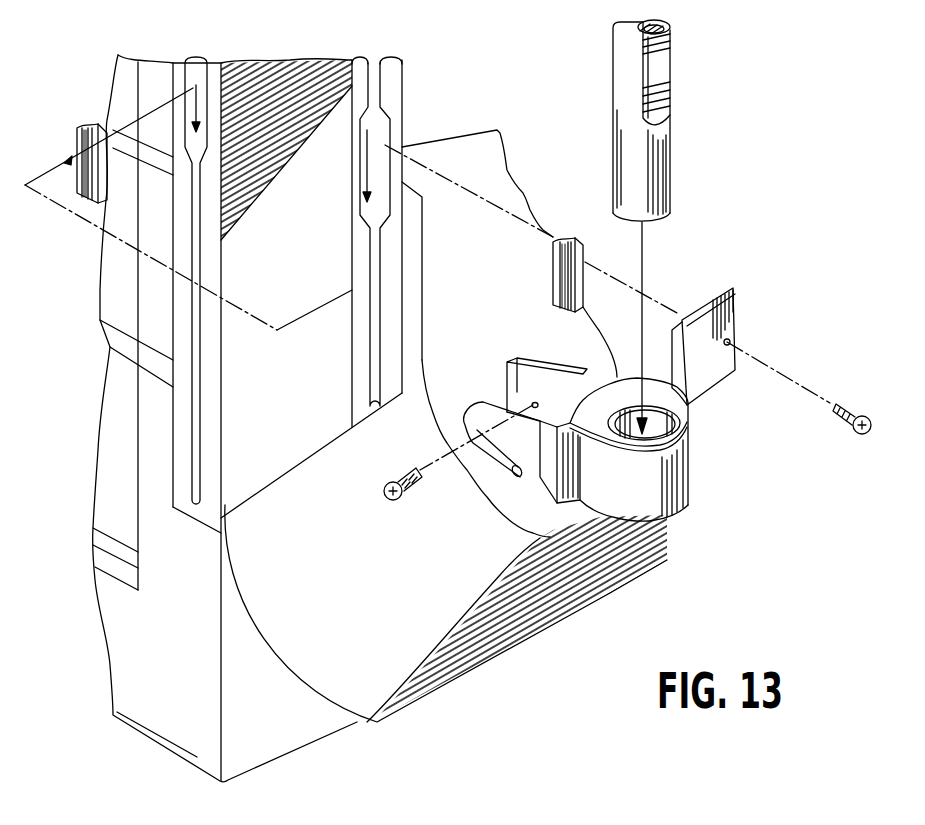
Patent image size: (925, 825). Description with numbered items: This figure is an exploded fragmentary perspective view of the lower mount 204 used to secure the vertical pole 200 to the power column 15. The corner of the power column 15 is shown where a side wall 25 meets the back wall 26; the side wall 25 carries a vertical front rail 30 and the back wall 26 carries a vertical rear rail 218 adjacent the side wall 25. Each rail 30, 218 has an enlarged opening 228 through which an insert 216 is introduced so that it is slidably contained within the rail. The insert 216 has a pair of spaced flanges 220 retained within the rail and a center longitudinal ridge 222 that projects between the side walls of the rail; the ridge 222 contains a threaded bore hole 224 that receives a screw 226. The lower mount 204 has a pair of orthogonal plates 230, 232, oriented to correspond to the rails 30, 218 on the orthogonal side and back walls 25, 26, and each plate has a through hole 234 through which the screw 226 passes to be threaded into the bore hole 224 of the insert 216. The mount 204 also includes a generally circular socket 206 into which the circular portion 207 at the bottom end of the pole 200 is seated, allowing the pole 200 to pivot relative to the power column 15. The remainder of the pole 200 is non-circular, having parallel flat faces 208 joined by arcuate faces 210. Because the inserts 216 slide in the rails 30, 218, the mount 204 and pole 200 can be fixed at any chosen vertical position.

The power column 15 is at (120, 732).
The side wall 25 is at (290, 62).
The back wall 26 is at (128, 663).
The vertical front rail 30 is at (393, 72).
The vertical pole 200 is at (636, 119).
The lower mount 204 is at (688, 488).
The circular socket 206 is at (683, 413).
The circular portion 207 is at (670, 185).
The flat face 208 is at (655, 77).
The arcuate face 210 is at (670, 42).
The insert 216 is at (82, 214).
The vertical rear rail 218 is at (182, 448).
The flange 220 is at (79, 125).
The center longitudinal ridge 222 is at (82, 133).
The threaded bore hole 224 is at (76, 145).
The screw 226 is at (408, 490).
The enlarged opening 228 is at (196, 64).
The plate 230 is at (737, 290).
The plate 232 is at (507, 380).
The through hole 234 is at (532, 405).